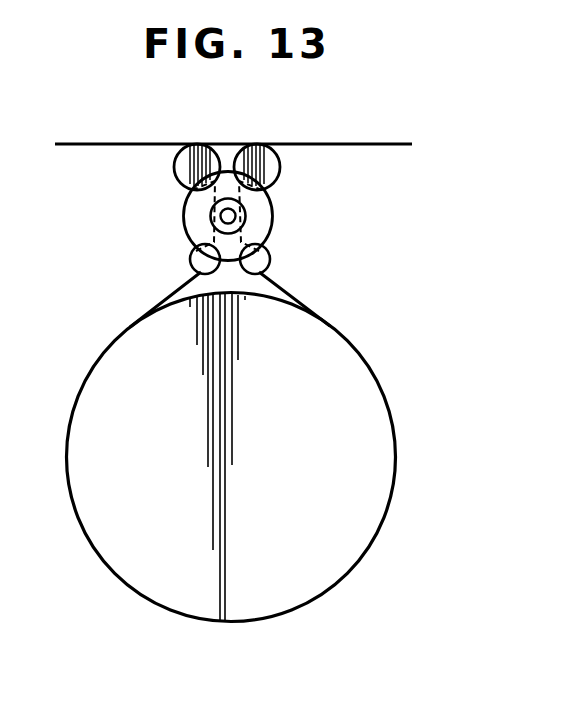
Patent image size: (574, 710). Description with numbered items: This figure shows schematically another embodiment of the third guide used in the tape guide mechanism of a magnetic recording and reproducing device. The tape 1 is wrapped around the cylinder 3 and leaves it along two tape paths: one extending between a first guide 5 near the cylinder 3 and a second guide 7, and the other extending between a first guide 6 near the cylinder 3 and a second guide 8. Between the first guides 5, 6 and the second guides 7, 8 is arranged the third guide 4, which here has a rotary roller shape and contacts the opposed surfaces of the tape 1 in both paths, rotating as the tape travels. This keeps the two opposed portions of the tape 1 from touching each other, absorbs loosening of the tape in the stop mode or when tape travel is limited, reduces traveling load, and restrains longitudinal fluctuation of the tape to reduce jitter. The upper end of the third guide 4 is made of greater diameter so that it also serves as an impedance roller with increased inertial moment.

The tape 1 is at (129, 143).
The cylinder 3 is at (392, 452).
The third guide 4 is at (184, 216).
The first guide 5 is at (191, 258).
The first guide 6 is at (270, 259).
The second guide 7 is at (176, 168).
The second guide 8 is at (280, 167).